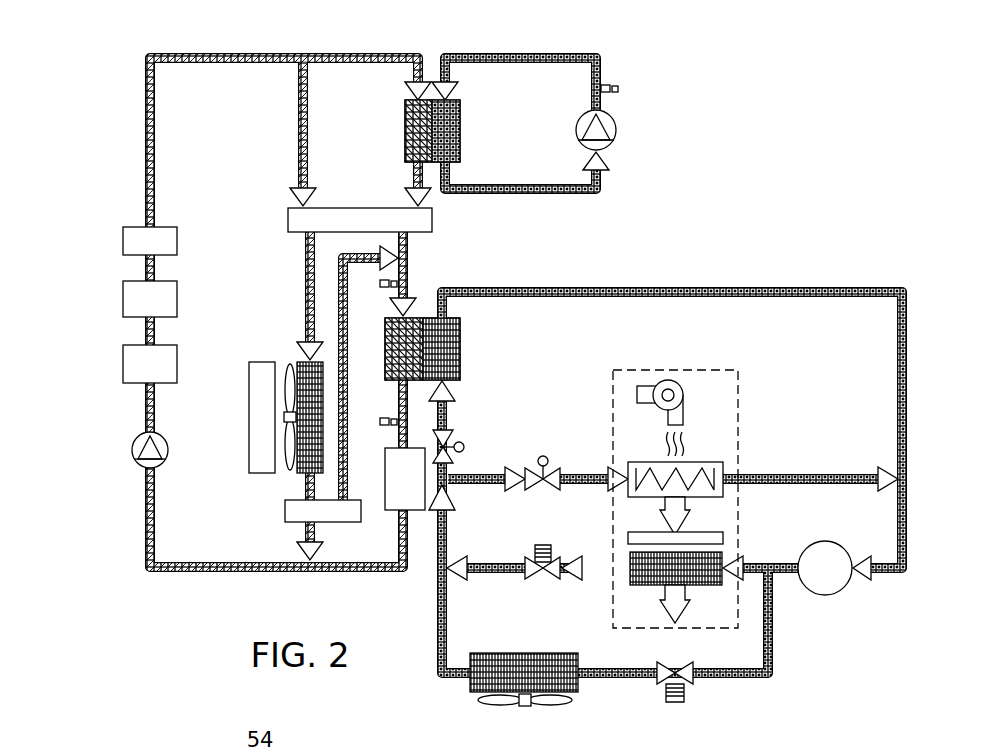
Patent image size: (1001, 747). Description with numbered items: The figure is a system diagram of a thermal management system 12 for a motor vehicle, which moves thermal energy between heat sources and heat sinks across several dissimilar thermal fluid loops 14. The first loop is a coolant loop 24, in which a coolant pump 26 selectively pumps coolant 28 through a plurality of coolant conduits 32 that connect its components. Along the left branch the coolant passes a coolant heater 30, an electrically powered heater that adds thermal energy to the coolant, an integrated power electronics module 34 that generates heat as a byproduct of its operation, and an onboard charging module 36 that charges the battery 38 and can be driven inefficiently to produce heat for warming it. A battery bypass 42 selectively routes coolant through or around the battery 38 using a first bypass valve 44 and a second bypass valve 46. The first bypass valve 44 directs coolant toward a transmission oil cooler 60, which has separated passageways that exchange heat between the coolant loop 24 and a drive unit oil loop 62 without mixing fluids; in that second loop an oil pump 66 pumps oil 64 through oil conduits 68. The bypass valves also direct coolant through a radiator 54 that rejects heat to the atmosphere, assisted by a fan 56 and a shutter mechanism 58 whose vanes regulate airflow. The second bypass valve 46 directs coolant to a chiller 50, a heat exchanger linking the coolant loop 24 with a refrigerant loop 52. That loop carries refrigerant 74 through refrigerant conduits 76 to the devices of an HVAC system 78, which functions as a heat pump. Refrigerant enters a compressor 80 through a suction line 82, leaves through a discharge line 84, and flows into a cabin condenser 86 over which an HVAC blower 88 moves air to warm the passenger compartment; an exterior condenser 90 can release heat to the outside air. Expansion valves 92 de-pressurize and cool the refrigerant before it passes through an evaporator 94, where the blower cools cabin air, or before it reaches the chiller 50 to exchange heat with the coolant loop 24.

The thermal management system 12 is at (771, 74).
The dissimilar thermal fluid loops 14 is at (96, 62).
The coolant loop 24 is at (259, 28).
The coolant pump 26 is at (133, 445).
The coolant 28 is at (145, 528).
The coolant heater 30 is at (123, 232).
The coolant conduits 32 is at (180, 52).
The integrated power electronics module 34 is at (123, 350).
The onboard charging module 36 is at (123, 290).
The battery 38 is at (393, 512).
The battery bypass 42 is at (273, 273).
The first bypass valve 44 is at (288, 215).
The second bypass valve 46 is at (285, 518).
The chiller 50 is at (385, 340).
The refrigerant loop 52 is at (828, 224).
The radiator 54 is at (298, 362).
The fan 56 is at (287, 455).
The shutter mechanism 58 is at (249, 390).
The transmission oil cooler 60 is at (405, 145).
The drive unit oil loop 62 is at (545, 52).
The oil 64 is at (596, 57).
The oil pump 66 is at (617, 125).
The oil conduits 68 is at (485, 52).
The refrigerant 74 is at (613, 290).
The refrigerant conduits 76 is at (782, 287).
The HVAC system 78 is at (738, 380).
The compressor 80 is at (840, 592).
The suction line 82 is at (898, 540).
The discharge line 84 is at (768, 560).
The cabin condenser 86 is at (638, 562).
The HVAC blower 88 is at (670, 385).
The exterior condenser 90 is at (485, 665).
The expansion valves 92 is at (452, 440).
The evaporator 94 is at (715, 465).